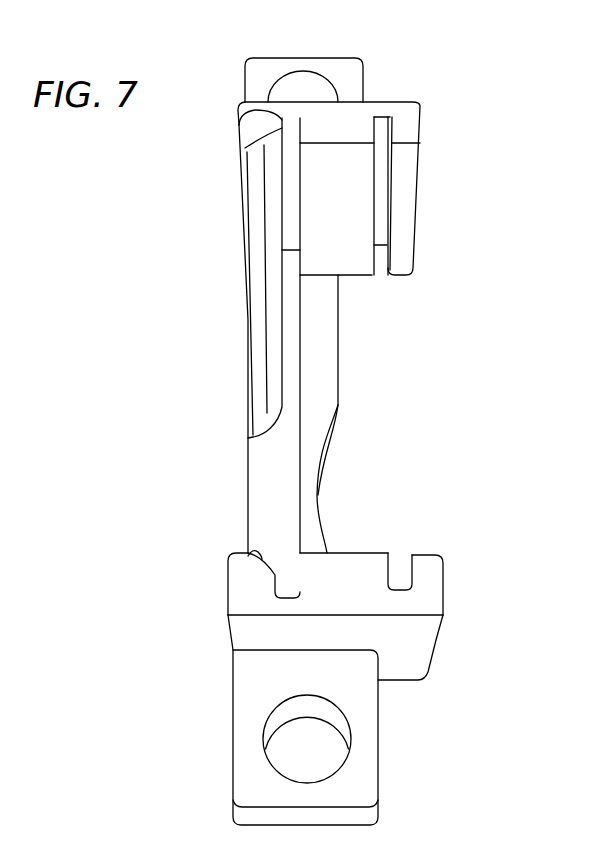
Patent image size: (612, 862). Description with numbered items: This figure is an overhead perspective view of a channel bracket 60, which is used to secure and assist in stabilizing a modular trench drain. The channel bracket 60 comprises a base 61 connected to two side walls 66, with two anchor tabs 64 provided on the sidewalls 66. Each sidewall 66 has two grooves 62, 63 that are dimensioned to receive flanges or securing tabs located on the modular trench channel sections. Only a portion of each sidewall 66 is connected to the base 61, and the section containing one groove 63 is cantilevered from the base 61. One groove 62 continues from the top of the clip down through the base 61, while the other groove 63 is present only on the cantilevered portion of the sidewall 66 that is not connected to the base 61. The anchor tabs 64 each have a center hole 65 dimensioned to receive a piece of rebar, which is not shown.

The channel bracket 60 is at (458, 273).
The base 61 is at (248, 387).
The groove 62 is at (250, 110).
The groove 63 is at (383, 133).
The anchor tab 64 is at (363, 82).
The center hole 65 is at (303, 92).
The side wall 66 is at (342, 187).